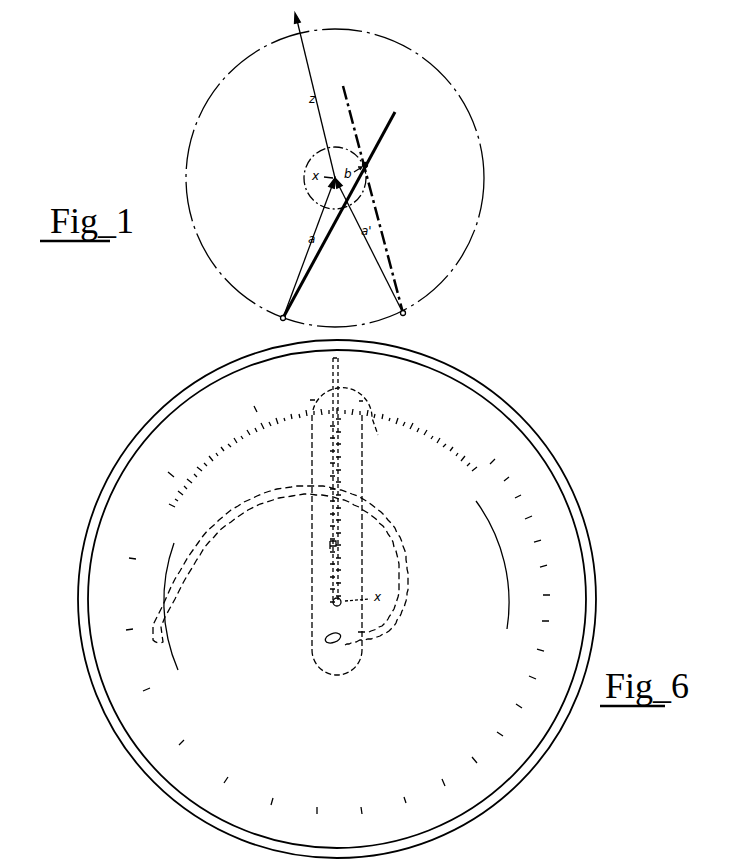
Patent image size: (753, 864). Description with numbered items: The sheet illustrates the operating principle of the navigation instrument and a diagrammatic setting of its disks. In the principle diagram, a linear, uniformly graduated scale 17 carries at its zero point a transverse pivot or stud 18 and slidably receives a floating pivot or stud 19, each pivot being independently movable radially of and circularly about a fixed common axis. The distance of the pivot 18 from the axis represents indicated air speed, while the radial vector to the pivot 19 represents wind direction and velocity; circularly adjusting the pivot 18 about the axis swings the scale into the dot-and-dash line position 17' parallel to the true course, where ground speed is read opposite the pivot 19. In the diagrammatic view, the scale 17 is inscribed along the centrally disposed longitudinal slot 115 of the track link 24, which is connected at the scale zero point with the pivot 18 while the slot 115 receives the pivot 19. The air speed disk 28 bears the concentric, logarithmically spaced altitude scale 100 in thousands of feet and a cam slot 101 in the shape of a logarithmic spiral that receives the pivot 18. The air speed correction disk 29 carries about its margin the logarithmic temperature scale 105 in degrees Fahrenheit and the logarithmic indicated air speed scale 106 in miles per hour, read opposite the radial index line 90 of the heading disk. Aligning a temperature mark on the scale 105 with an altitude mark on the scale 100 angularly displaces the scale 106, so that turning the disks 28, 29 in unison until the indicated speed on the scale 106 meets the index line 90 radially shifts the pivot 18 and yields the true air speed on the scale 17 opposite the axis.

In FIG. 1, the scale 17 is at (339, 215).
In FIG. 6, the scale 17 is at (351, 532).
In FIG. 1, the dot-and-dash line position of scale 17' is at (379, 201).
In FIG. 1, the pivot or stud 18 is at (283, 318).
In FIG. 6, the pivot or stud 18 is at (326, 642).
In FIG. 1, the floating pivot or stud 19 is at (371, 165).
In FIG. 6, the floating pivot or stud 19 is at (333, 605).
In FIG. 6, the track link 24 is at (360, 657).
In FIG. 6, the air speed disk 28 is at (590, 609).
In FIG. 6, the air speed correction disk 29 is at (572, 558).
In FIG. 6, the radial index line 90 is at (340, 380).
In FIG. 6, the altitude scale 100 is at (357, 420).
In FIG. 6, the cam slot 101 is at (402, 552).
In FIG. 6, the temperature scale 105 is at (405, 410).
In FIG. 6, the indicated air speed scale 106 is at (258, 409).
In FIG. 6, the longitudinal slot 115 is at (328, 545).